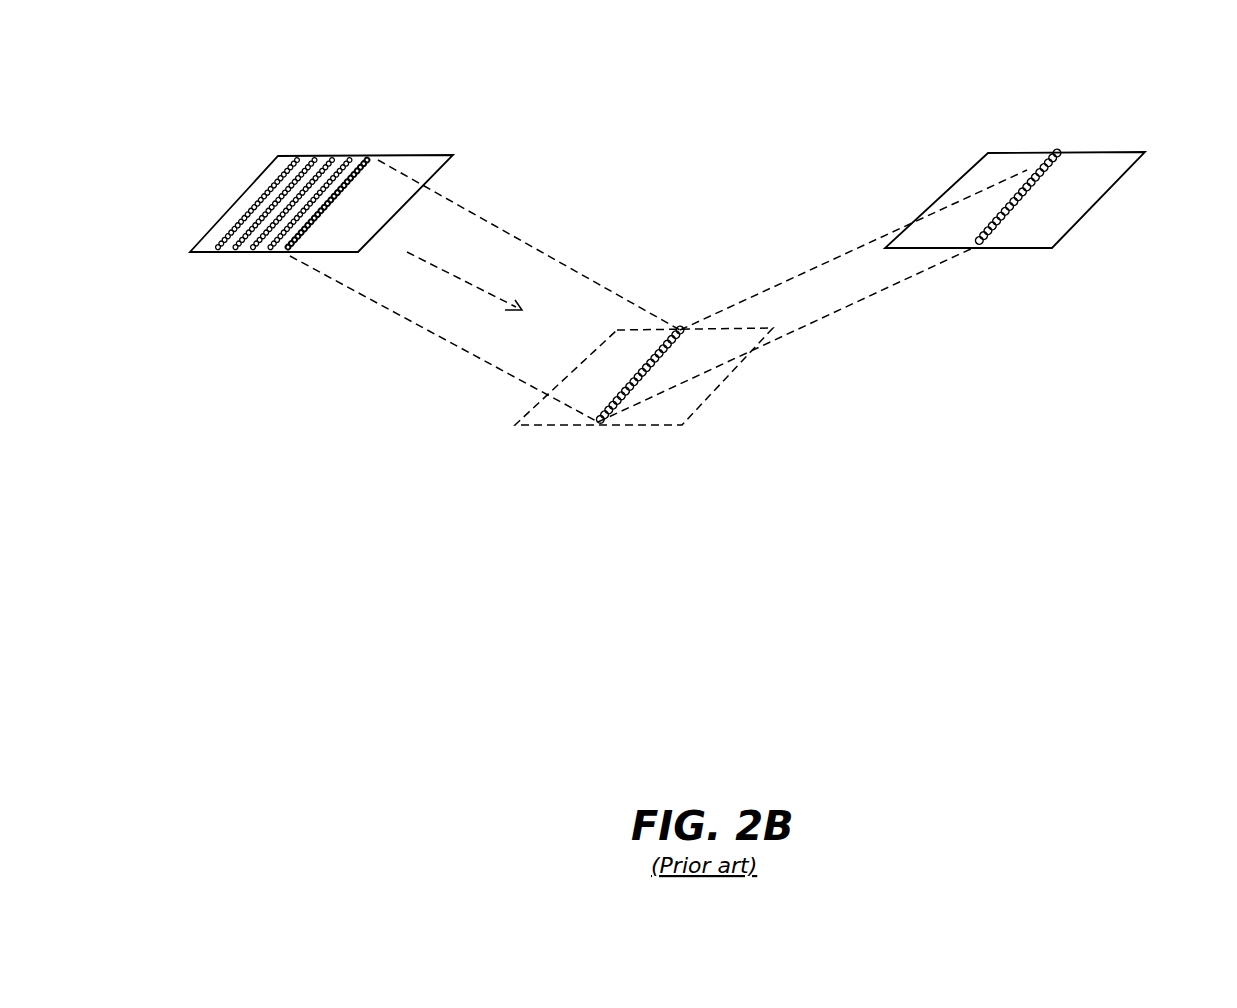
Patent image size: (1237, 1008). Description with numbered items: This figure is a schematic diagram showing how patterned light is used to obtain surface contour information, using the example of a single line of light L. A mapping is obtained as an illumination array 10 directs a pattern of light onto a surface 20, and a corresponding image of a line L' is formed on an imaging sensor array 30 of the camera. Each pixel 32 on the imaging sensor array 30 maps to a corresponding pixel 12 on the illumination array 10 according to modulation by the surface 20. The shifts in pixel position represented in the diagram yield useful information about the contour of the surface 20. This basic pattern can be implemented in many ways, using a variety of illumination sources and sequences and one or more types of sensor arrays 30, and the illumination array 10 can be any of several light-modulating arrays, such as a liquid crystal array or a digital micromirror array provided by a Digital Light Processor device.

The illumination array 10 is at (453, 155).
The pixel 12 is at (345, 180).
The surface 20 is at (698, 407).
The imaging sensor array 30 is at (1130, 165).
The pixel 32 is at (1033, 168).
The line of light L is at (290, 249).
The image of a line L' is at (1017, 256).